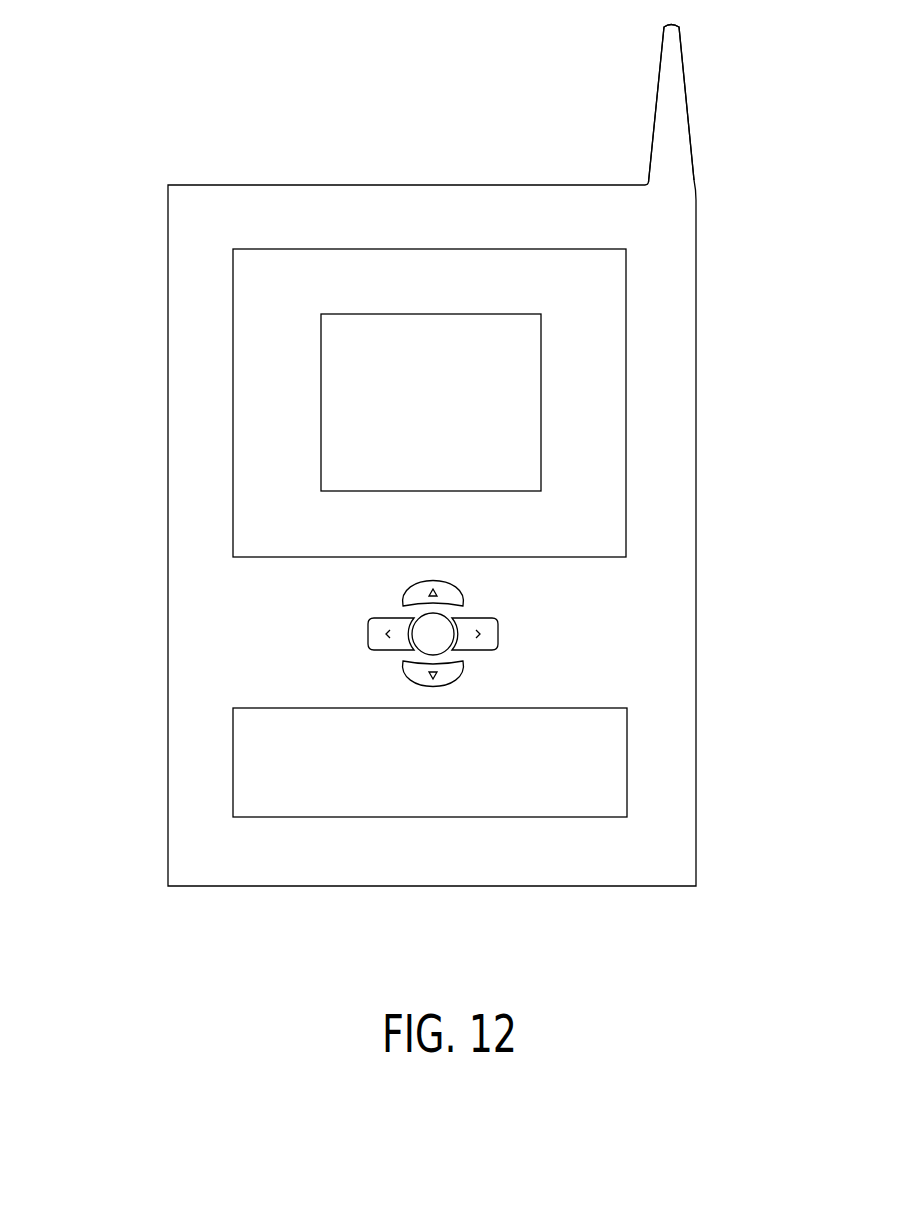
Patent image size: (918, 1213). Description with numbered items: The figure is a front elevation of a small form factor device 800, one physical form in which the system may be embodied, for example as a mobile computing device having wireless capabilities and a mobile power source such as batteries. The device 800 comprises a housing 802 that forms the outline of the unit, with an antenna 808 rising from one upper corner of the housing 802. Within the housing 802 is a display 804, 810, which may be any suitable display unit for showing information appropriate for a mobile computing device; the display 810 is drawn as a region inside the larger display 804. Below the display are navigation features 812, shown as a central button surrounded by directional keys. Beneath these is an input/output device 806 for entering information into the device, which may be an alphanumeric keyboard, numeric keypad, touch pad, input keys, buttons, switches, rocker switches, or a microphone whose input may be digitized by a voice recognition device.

The device 800 is at (166, 125).
The housing 802 is at (168, 622).
The display 804 is at (626, 305).
The input/output (I/O) device 806 is at (627, 762).
The antenna 808 is at (656, 105).
The display 810 is at (430, 314).
The navigation features 812 is at (534, 635).